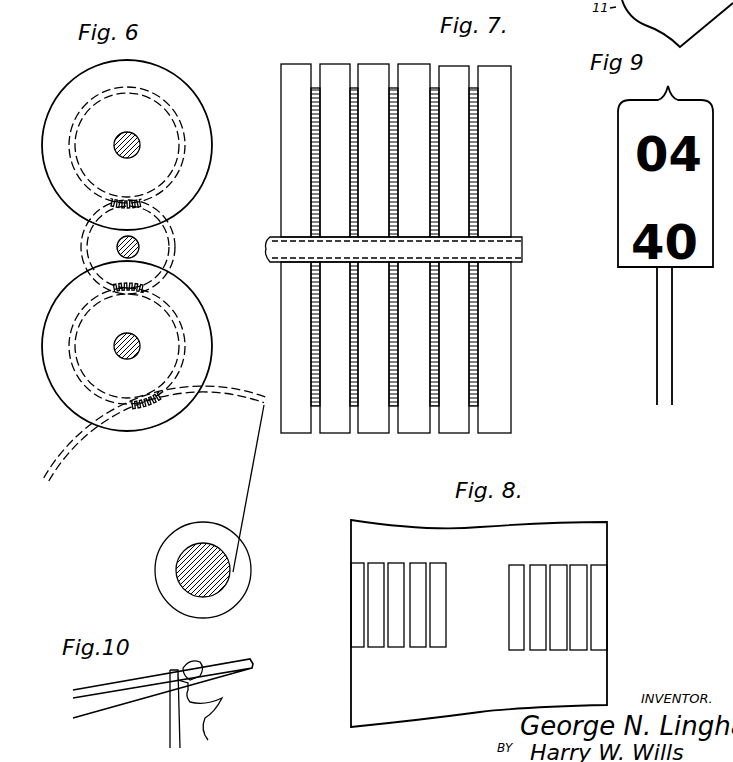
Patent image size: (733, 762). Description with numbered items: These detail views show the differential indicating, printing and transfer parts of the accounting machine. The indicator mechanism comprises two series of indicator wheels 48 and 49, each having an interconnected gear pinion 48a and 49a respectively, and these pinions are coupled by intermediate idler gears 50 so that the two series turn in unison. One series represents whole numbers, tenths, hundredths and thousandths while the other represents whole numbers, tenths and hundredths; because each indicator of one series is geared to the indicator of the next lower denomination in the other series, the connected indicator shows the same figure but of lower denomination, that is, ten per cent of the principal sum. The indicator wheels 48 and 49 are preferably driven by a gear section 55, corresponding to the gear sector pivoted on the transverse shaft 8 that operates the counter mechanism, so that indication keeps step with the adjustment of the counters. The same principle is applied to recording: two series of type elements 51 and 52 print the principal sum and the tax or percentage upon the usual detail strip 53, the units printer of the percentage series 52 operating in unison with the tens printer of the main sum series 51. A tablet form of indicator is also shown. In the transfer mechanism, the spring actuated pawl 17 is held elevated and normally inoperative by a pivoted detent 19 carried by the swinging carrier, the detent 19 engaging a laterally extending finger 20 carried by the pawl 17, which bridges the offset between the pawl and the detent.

In FIG. 6, the transverse shaft 8 is at (215, 570).
In FIG. 10, the spring actuated pawl 17 is at (224, 660).
In FIG. 10, the pivoted detent 19 is at (185, 724).
In FIG. 10, the laterally extending finger 20 is at (182, 665).
In FIG. 6, the indicator wheels 48 is at (200, 324).
In FIG. 7, the indicator wheels 48 is at (281, 337).
In FIG. 6, the gear pinion 48a is at (77, 345).
In FIG. 7, the gear pinion 48a is at (313, 356).
In FIG. 6, the indicator wheels 49 is at (190, 200).
In FIG. 7, the indicator wheels 49 is at (281, 184).
In FIG. 6, the gear pinion 49a is at (77, 174).
In FIG. 7, the gear pinion 49a is at (311, 204).
In FIG. 6, the intermediate idler gears 50 is at (155, 248).
In FIG. 7, the intermediate idler gears 50 is at (310, 249).
In FIG. 8, the type elements 51 is at (358, 594).
In FIG. 8, the type elements 52 is at (600, 582).
In FIG. 8, the detail strip 53 is at (351, 536).
In FIG. 6, the gear section 55 is at (227, 452).